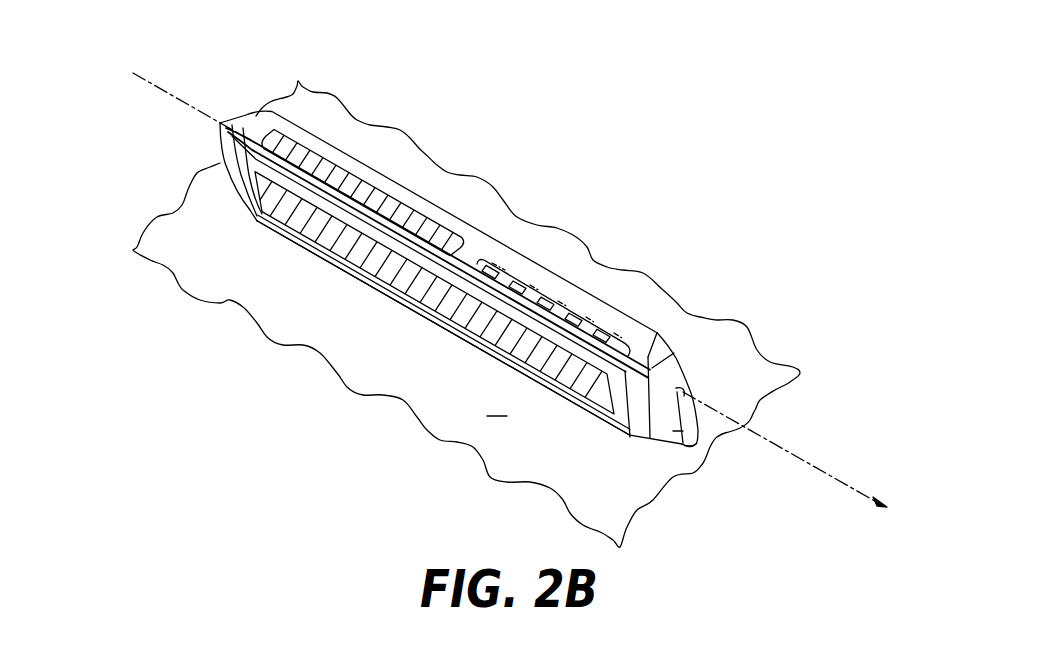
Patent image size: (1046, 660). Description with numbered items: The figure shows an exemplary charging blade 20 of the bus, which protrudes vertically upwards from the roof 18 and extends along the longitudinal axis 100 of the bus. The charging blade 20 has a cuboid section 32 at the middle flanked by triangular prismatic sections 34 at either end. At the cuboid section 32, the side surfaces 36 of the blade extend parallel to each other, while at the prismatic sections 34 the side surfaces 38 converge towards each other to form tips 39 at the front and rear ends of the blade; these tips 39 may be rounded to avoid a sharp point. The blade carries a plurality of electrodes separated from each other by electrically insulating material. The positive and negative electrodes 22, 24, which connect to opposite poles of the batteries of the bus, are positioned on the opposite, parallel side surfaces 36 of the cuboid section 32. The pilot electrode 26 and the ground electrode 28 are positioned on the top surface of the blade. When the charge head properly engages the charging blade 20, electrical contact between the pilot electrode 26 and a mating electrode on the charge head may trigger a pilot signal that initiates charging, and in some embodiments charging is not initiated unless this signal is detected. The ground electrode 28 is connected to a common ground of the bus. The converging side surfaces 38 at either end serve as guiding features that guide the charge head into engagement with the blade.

The roof 18 is at (466, 314).
The charging blade 20 is at (434, 311).
The positive electrode 22 is at (303, 222).
The negative electrode 24 is at (438, 208).
The pilot electrode 26 is at (315, 160).
The ground electrode 28 is at (563, 313).
The cuboid section 32 is at (399, 320).
The triangular prismatic section 34 is at (216, 182).
The side surface 36 is at (480, 318).
The side surface 38 is at (680, 433).
The tip 39 is at (218, 122).
The longitudinal axis 100 is at (788, 447).